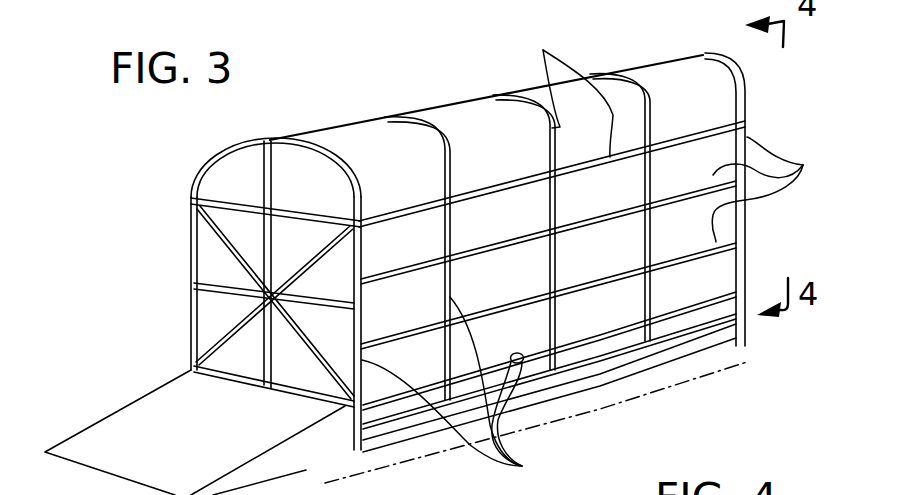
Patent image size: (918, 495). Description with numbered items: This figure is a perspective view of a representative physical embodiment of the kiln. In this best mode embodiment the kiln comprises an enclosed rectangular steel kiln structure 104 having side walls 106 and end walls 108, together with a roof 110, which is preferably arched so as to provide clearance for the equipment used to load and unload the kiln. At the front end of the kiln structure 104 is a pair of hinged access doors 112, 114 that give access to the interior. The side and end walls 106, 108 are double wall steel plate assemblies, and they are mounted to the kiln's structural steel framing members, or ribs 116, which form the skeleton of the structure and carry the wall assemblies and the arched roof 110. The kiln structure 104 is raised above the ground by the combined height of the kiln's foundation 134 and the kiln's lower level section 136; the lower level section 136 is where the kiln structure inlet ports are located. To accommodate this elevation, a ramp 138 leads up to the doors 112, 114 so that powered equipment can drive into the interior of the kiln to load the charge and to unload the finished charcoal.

The kiln structure 104 is at (366, 75).
The side walls 106 is at (522, 268).
The end walls 108 is at (733, 67).
The roof 110 is at (337, 125).
The hinged access door 112 is at (213, 252).
The hinged access door 114 is at (310, 283).
The ribs 116 is at (602, 250).
The foundation 134 is at (397, 441).
The lower level section 136 is at (614, 348).
The ramp 138 is at (167, 400).